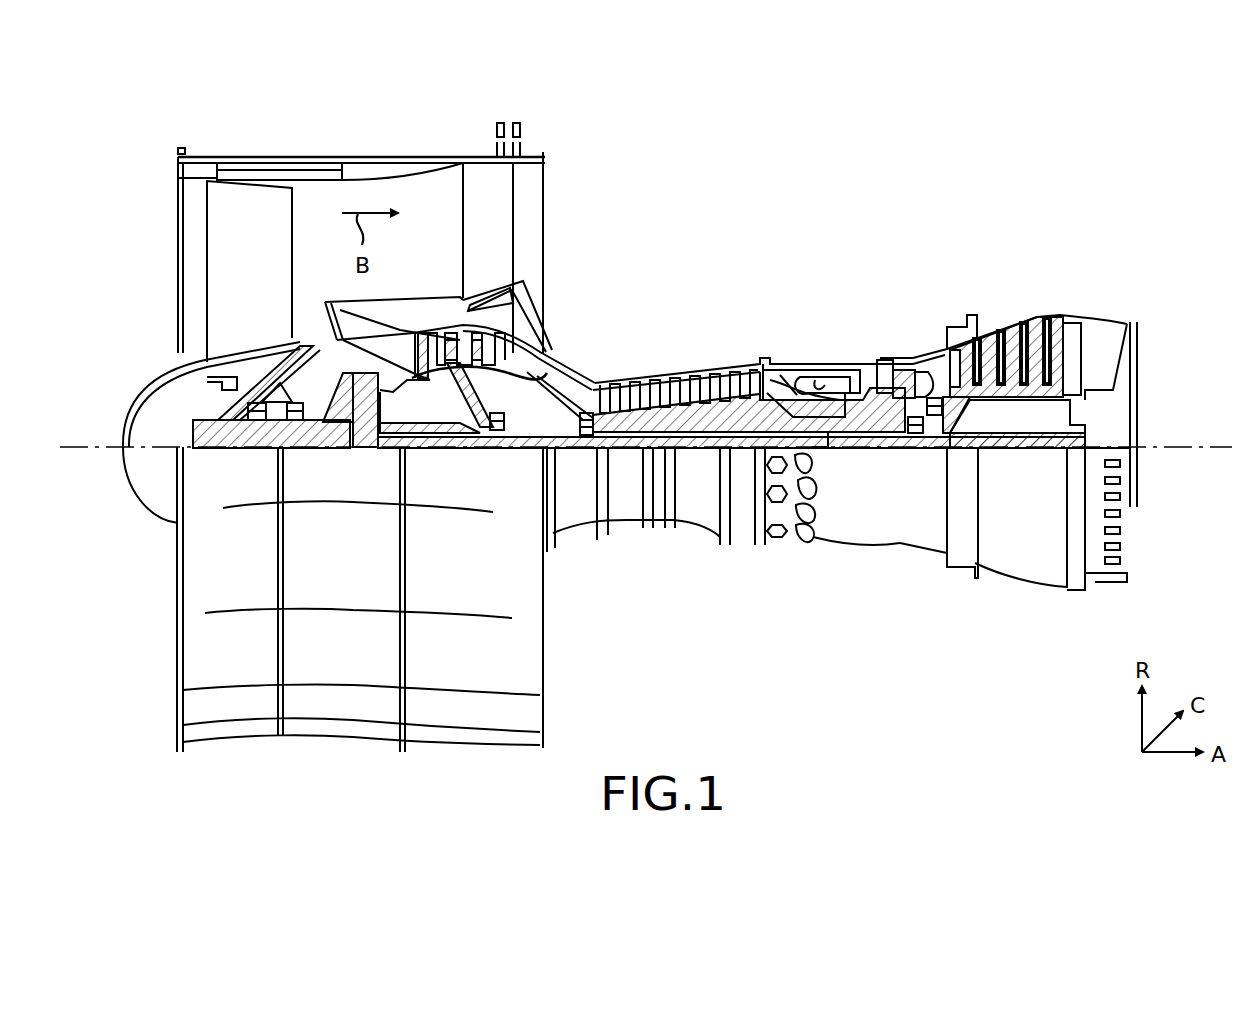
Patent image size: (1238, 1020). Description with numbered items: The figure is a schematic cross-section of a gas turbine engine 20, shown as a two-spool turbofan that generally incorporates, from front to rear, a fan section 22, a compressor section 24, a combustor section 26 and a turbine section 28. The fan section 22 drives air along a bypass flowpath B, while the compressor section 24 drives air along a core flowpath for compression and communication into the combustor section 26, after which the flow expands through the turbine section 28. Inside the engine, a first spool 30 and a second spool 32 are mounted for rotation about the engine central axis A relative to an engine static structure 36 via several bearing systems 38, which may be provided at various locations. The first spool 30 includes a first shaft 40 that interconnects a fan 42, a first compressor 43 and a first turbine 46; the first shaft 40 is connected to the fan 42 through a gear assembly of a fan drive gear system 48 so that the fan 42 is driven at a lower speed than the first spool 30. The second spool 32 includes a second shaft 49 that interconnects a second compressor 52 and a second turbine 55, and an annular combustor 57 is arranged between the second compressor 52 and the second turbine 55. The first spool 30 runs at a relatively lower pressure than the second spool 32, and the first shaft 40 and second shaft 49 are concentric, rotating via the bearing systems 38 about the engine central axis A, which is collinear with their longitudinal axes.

The gas turbine engine 20 is at (835, 205).
The fan section 22 is at (285, 150).
The compressor section 24 is at (592, 343).
The combustor section 26 is at (815, 332).
The turbine section 28 is at (968, 265).
The first spool 30 is at (700, 455).
The second spool 32 is at (750, 410).
The engine static structure 36 is at (742, 546).
The bearing systems 38 is at (497, 443).
The first shaft 40 is at (557, 455).
The fan 42 is at (259, 287).
The first compressor 43 is at (483, 343).
The first turbine 46 is at (1014, 334).
The fan drive gear system 48 is at (355, 443).
The second shaft 49 is at (822, 433).
The second compressor 52 is at (670, 405).
The second turbine 55 is at (882, 372).
The annular combustor 57 is at (815, 385).